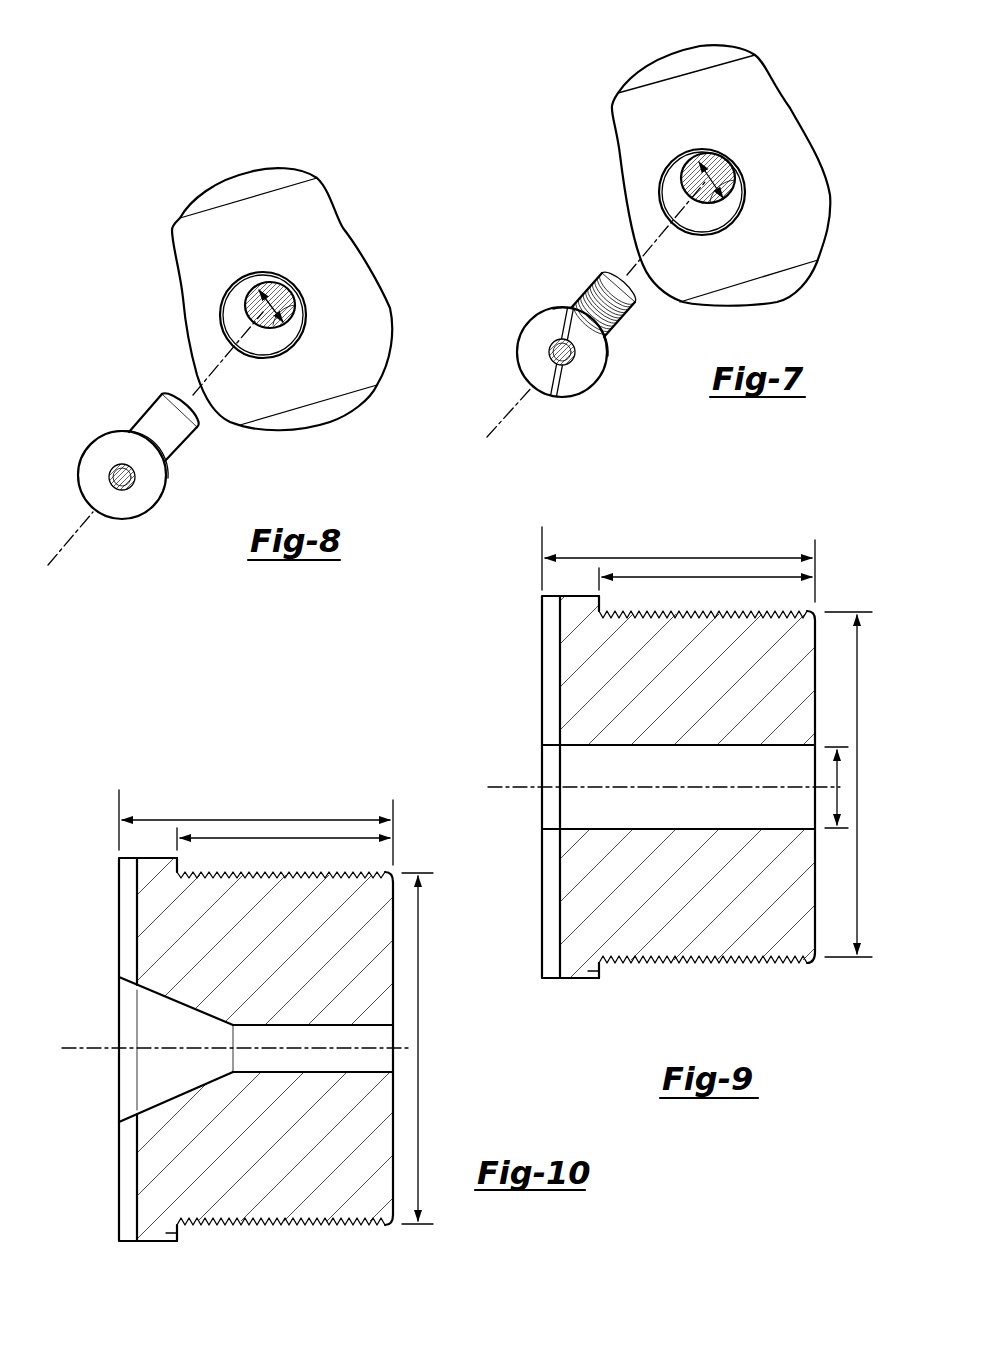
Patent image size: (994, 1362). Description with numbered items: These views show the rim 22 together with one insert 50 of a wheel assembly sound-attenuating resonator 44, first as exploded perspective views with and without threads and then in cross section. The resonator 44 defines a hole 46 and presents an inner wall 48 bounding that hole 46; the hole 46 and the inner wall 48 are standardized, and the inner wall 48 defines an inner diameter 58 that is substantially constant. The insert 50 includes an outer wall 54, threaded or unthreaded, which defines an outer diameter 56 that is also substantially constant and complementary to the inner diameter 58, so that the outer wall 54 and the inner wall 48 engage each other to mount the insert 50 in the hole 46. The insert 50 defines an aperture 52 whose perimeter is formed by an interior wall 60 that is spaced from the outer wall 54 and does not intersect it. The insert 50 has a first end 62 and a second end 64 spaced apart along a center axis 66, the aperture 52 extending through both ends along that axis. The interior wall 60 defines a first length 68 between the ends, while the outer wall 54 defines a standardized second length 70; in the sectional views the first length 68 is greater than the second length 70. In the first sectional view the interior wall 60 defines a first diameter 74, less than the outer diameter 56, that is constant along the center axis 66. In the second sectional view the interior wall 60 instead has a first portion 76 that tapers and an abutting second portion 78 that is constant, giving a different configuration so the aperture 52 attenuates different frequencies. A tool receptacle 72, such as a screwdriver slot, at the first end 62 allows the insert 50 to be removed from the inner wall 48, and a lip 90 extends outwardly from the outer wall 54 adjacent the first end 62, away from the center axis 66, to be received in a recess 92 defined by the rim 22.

In FIG. 7, the rim 22 is at (757, 87).
In FIG. 8, the rim 22 is at (320, 212).
In FIG. 7, the resonator 44 is at (640, 188).
In FIG. 8, the resonator 44 is at (202, 313).
In FIG. 7, the hole 46 is at (682, 170).
In FIG. 8, the hole 46 is at (243, 297).
In FIG. 7, the inner wall 48 is at (710, 202).
In FIG. 8, the inner wall 48 is at (273, 325).
In FIG. 7, the insert 50 is at (592, 385).
In FIG. 8, the insert 50 is at (155, 512).
In FIG. 9, the insert 50 is at (792, 982).
In FIG. 10, the insert 50 is at (372, 1246).
In FIG. 7, the aperture 52 is at (550, 353).
In FIG. 8, the aperture 52 is at (110, 480).
In FIG. 9, the aperture 52 is at (568, 767).
In FIG. 10, the aperture 52 is at (137, 1028).
In FIG. 7, the outer wall 54 is at (625, 307).
In FIG. 8, the outer wall 54 is at (183, 432).
In FIG. 9, the outer wall 54 is at (708, 963).
In FIG. 10, the outer wall 54 is at (287, 1226).
In FIG. 9, the outer diameter 56 is at (857, 667).
In FIG. 10, the outer diameter 56 is at (418, 930).
In FIG. 7, the inner diameter 58 is at (733, 178).
In FIG. 8, the inner diameter 58 is at (285, 305).
In FIG. 7, the interior wall 60 is at (567, 362).
In FIG. 8, the interior wall 60 is at (118, 490).
In FIG. 9, the interior wall 60 is at (680, 817).
In FIG. 10, the interior wall 60 is at (278, 1065).
In FIG. 7, the first end 62 is at (542, 325).
In FIG. 8, the first end 62 is at (102, 452).
In FIG. 9, the first end 62 is at (542, 705).
In FIG. 10, the first end 62 is at (119, 958).
In FIG. 7, the second end 64 is at (620, 272).
In FIG. 8, the second end 64 is at (193, 398).
In FIG. 9, the second end 64 is at (815, 862).
In FIG. 10, the second end 64 is at (393, 956).
In FIG. 7, the center axis 66 is at (503, 420).
In FIG. 8, the center axis 66 is at (63, 550).
In FIG. 9, the center axis 66 is at (488, 790).
In FIG. 10, the center axis 66 is at (65, 1050).
In FIG. 9, the first length 68 is at (634, 556).
In FIG. 10, the first length 68 is at (213, 818).
In FIG. 9, the second length 70 is at (686, 580).
In FIG. 10, the second length 70 is at (265, 840).
In FIG. 7, the tool receptacle 72 is at (552, 308).
In FIG. 9, the tool receptacle 72 is at (550, 657).
In FIG. 10, the tool receptacle 72 is at (128, 918).
In FIG. 9, the first diameter 74 is at (837, 776).
In FIG. 10, the first portion 76 is at (185, 1033).
In FIG. 10, the second portion 78 is at (268, 1043).
In FIG. 7, the lip 90 is at (542, 308).
In FIG. 8, the lip 90 is at (117, 430).
In FIG. 9, the lip 90 is at (600, 972).
In FIG. 10, the lip 90 is at (177, 1233).
In FIG. 7, the recess 92 is at (660, 180).
In FIG. 8, the recess 92 is at (210, 308).